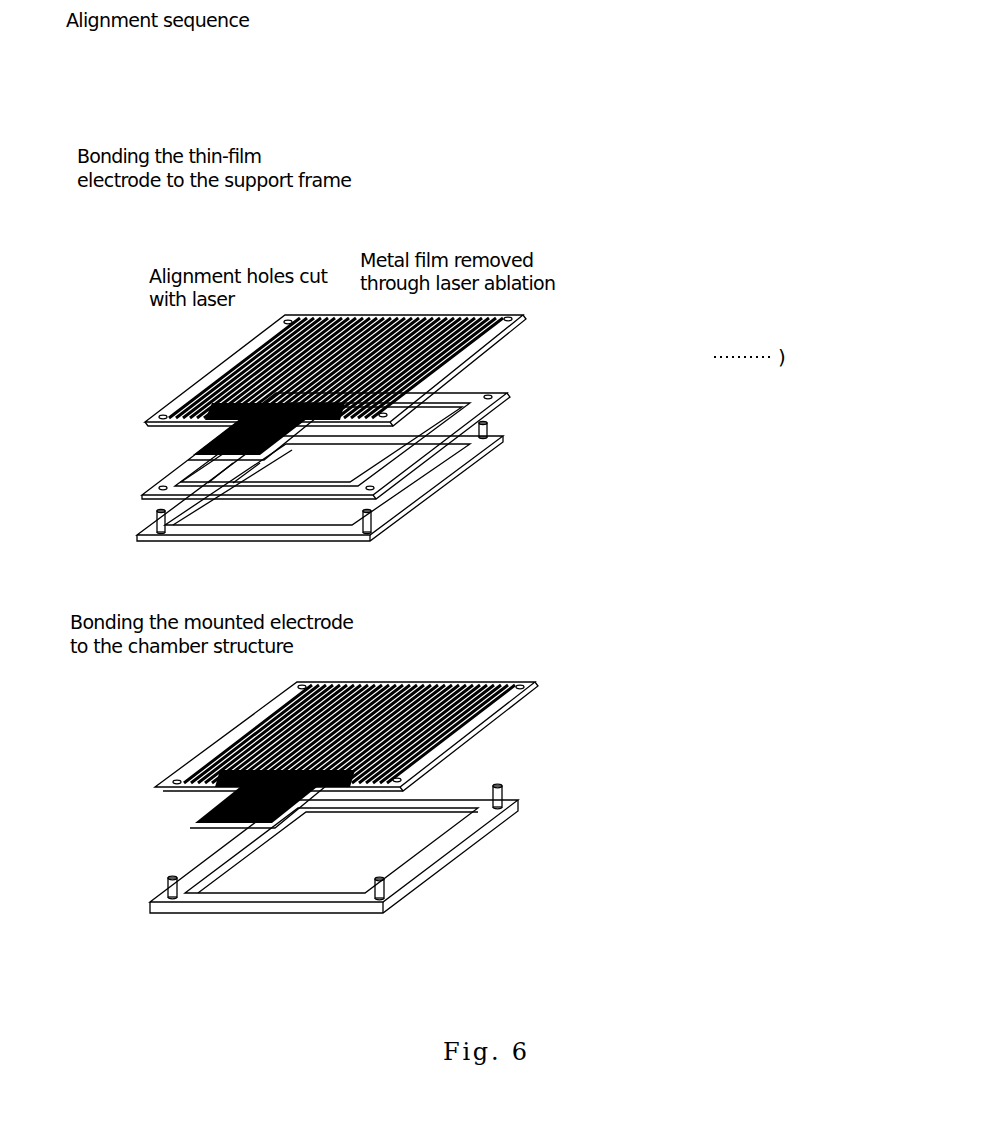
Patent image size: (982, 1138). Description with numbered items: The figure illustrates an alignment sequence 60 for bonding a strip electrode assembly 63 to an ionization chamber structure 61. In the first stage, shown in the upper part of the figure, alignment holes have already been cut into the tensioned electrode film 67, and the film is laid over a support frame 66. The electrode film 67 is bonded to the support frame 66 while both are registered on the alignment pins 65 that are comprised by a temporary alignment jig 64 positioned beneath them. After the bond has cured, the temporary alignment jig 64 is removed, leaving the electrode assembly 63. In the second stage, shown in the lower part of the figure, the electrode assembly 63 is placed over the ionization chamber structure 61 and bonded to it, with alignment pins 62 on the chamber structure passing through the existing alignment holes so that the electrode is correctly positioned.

The alignment sequence 60 is at (62, 932).
The ionization chamber structure 61 is at (515, 848).
The alignment pins 62 is at (535, 790).
The strip electrode assembly 63 is at (535, 690).
The temporary alignment jig 64 is at (498, 487).
The alignment pins 65 is at (520, 432).
The support frame 66 is at (518, 397).
The tensioned electrode film 67 is at (520, 336).